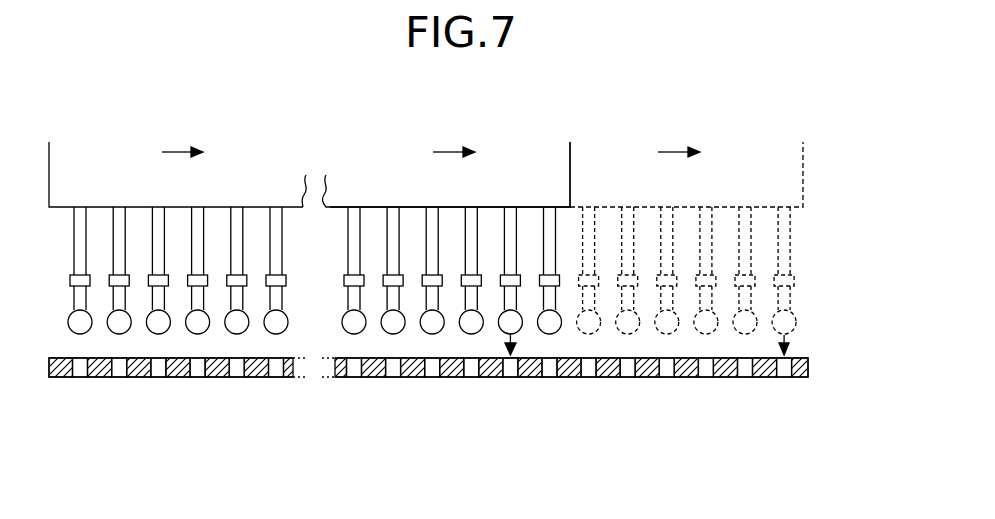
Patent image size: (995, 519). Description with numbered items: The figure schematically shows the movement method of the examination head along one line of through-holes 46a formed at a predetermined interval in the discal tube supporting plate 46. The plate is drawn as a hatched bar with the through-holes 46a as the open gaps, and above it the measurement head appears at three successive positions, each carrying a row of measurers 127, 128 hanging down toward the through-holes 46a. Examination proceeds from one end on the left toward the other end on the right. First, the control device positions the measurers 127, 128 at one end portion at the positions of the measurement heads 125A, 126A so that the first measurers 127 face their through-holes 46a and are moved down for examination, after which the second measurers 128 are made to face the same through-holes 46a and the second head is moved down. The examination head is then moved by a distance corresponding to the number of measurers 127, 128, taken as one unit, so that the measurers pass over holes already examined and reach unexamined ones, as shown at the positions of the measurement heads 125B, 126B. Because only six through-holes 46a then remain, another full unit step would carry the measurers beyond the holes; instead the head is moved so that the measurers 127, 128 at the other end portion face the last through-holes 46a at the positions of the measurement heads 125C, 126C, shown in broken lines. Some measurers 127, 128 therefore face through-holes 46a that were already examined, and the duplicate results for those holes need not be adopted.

The first measurement head 125A is at (309, 150).
The second measurement head 126A is at (106, 170).
The first measurement head 125B is at (476, 150).
The second measurement head 126B is at (512, 172).
The first measurement head 125C is at (720, 150).
The second measurement head 126C is at (763, 172).
The first measurer 127 is at (466, 347).
The second measurer 128 is at (466, 347).
The tube supporting plate 46 is at (425, 415).
The through-hole 46a is at (98, 378).